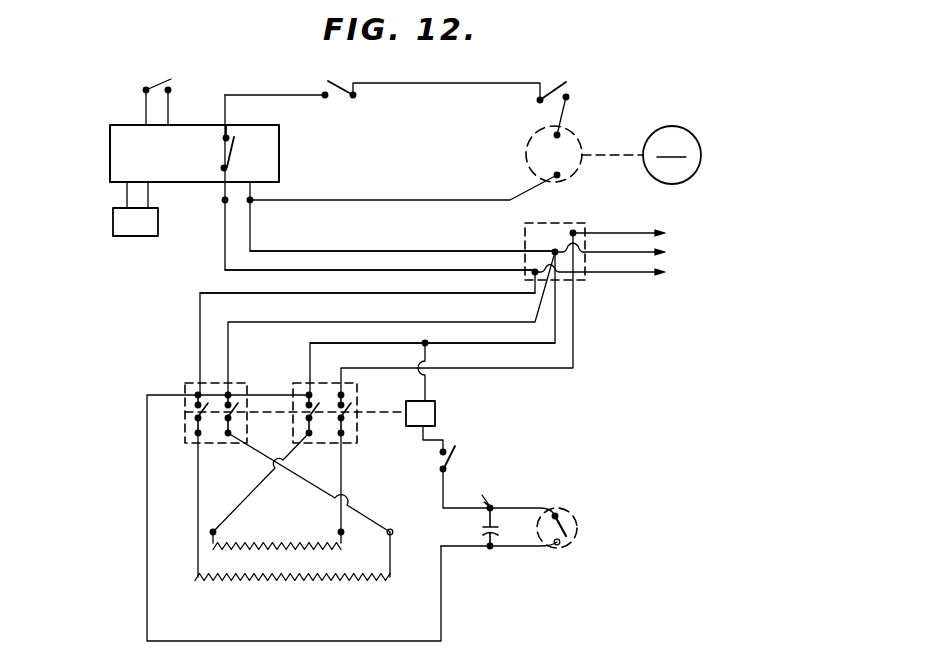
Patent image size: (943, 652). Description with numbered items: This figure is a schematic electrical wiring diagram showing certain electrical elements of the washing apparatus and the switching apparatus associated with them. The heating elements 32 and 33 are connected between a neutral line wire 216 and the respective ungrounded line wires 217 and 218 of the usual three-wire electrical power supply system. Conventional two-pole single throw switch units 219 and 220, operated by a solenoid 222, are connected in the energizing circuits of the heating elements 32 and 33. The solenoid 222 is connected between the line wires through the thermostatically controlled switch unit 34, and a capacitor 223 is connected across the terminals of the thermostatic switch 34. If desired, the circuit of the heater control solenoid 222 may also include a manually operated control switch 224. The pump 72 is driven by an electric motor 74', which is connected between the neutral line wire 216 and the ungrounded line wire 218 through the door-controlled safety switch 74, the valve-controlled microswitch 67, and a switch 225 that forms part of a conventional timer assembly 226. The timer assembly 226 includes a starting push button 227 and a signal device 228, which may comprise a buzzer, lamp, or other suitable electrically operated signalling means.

The starting push button 227 is at (161, 80).
The timer assembly 226 is at (110, 146).
The switch 225 is at (236, 157).
The signal device 228 is at (127, 236).
The microswitch 67 is at (338, 100).
The door-operated safety switch 74 is at (599, 92).
The electric motor 74' is at (576, 160).
The pump 72 is at (700, 170).
The ungrounded line wire 217 is at (573, 312).
The neutral line wire 216 is at (446, 249).
The ungrounded line wire 218 is at (335, 270).
The solenoid 222 is at (432, 416).
The manually operated control switch 224 is at (448, 458).
The capacitor 223 is at (485, 528).
The thermostatically controlled switch unit 34 is at (572, 512).
The two-pole single throw switch unit 220 is at (215, 445).
The two-pole single throw switch unit 219 is at (358, 440).
The heating element 33 is at (259, 545).
The heating element 32 is at (286, 579).